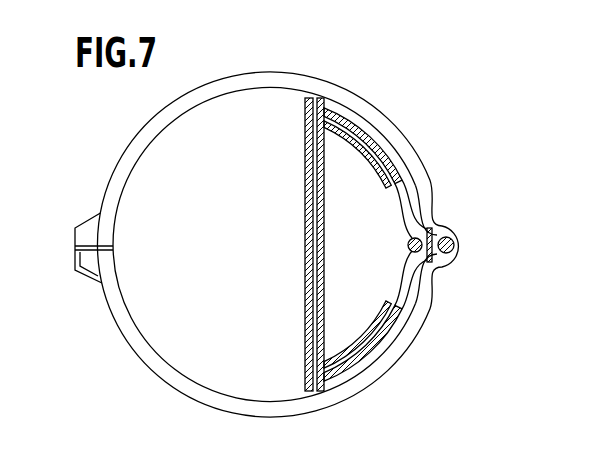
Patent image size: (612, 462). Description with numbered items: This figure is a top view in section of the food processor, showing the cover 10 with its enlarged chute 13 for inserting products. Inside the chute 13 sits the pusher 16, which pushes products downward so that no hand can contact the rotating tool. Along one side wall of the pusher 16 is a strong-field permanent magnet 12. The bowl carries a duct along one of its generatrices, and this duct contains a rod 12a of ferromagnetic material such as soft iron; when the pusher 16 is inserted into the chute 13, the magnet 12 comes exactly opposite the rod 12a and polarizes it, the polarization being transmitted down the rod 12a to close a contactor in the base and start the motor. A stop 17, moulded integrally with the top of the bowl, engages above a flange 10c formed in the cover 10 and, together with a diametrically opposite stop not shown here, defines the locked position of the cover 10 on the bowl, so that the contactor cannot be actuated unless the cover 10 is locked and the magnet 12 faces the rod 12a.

The cover 10 is at (153, 187).
The flange 10c is at (93, 272).
The permanent magnet 12 is at (430, 270).
The rod 12a is at (449, 234).
The chute 13 is at (307, 211).
The pusher 16 is at (350, 292).
The stop 17 is at (92, 238).